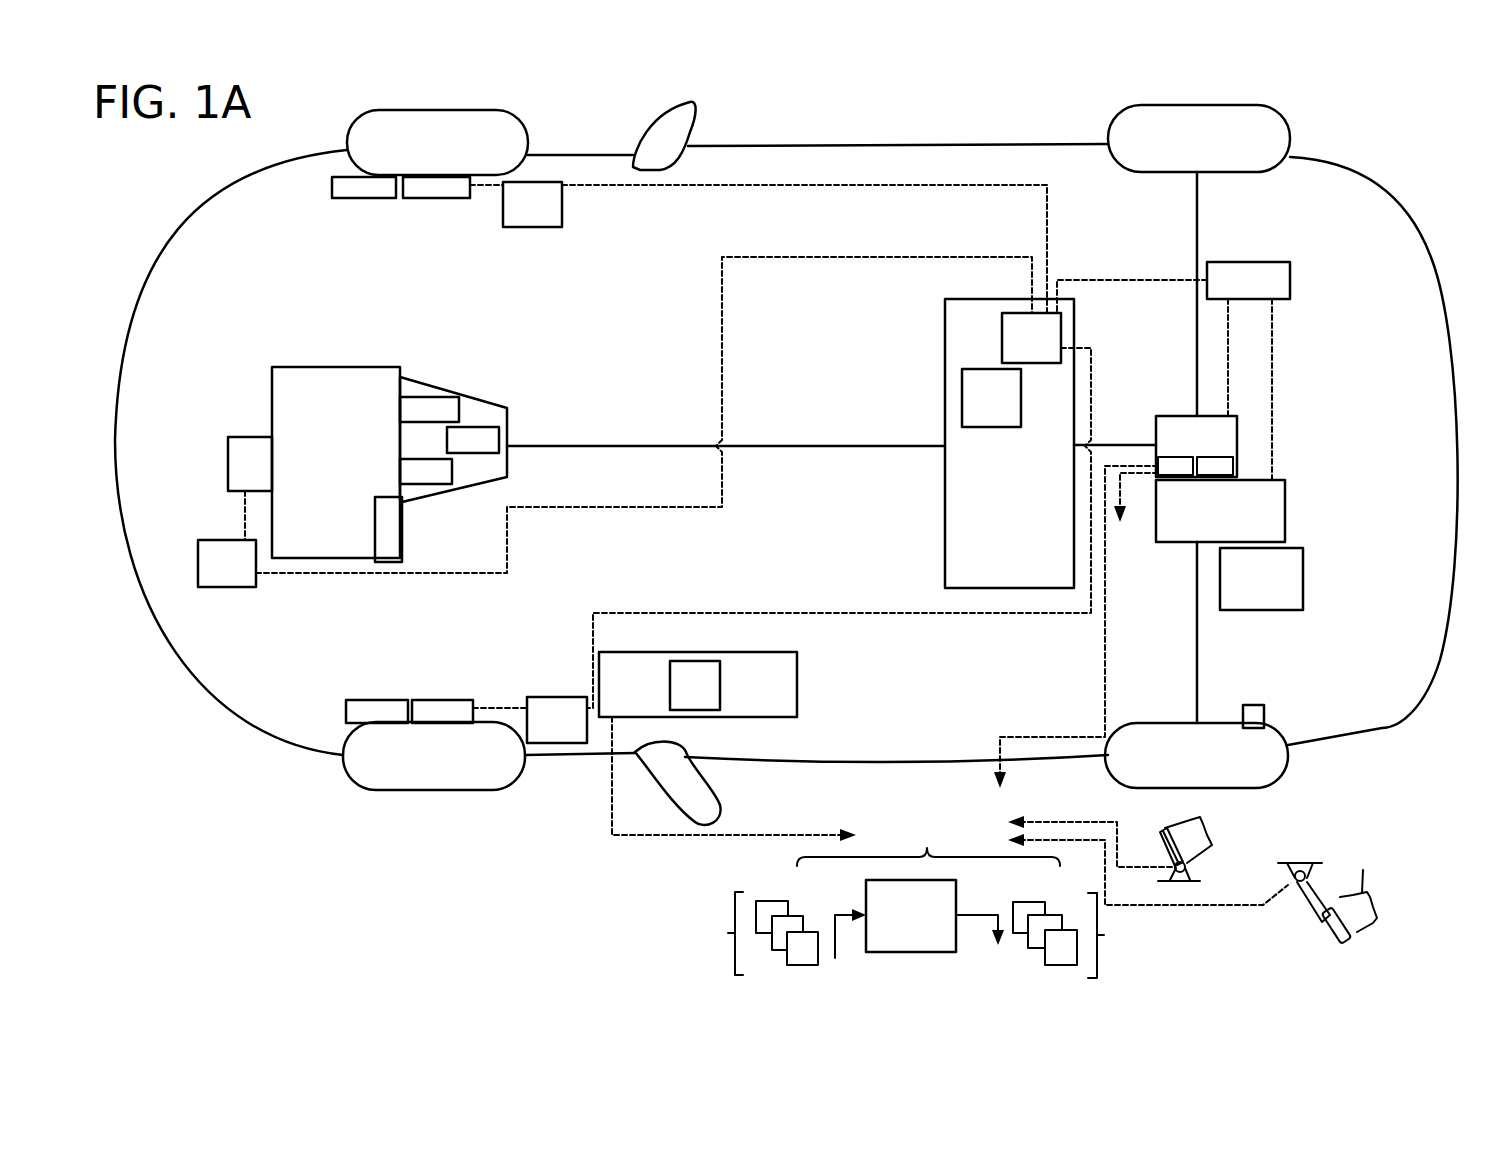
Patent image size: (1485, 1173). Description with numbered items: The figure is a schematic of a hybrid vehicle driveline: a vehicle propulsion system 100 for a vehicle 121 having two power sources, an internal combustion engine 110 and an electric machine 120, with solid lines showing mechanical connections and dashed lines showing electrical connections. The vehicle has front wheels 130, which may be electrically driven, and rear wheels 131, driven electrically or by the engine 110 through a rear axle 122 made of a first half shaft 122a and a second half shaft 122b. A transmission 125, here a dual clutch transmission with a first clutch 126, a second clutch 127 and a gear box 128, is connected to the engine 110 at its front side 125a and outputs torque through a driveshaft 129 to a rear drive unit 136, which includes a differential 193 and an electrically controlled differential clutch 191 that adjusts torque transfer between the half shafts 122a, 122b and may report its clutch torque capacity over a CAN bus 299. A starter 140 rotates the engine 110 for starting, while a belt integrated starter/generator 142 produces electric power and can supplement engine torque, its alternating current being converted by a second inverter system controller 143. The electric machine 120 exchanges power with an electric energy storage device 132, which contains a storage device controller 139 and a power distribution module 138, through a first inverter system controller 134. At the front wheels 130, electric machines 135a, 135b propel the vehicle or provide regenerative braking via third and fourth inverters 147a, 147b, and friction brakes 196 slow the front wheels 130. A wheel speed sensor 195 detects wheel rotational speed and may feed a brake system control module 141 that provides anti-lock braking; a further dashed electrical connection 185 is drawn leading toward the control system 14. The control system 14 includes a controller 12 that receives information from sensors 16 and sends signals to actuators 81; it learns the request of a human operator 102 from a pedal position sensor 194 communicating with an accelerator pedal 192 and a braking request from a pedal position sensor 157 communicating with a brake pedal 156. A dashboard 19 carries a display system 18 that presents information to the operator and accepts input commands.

The vehicle propulsion system 100 is at (935, 120).
The vehicle 121 is at (1410, 750).
The front wheels 130 is at (457, 110).
The rear wheels 131 is at (1238, 105).
The rear axle 122 is at (1249, 447).
The first half shaft 122a is at (1197, 225).
The second half shaft 122b is at (1197, 648).
The internal combustion engine 110 is at (336, 462).
The belt integrated starter/generator 142 is at (250, 464).
The second inverter system controller 143 is at (615, 422).
The starter 140 is at (375, 502).
The transmission 125 is at (425, 413).
The front side of the transmission 125a is at (398, 442).
The first clutch 126 is at (429, 409).
The second clutch 127 is at (426, 471).
The gear box 128 is at (473, 440).
The driveshaft 129 is at (617, 445).
The electric energy storage device 132 is at (1009, 443).
The power distribution module 138 is at (839, 510).
The electric energy storage device controller 139 is at (991, 398).
The first inverter system controller 134 is at (1173, 371).
The rear drive unit 136 is at (1196, 446).
The electrically controlled differential clutch 191 is at (1175, 466).
The differential 193 is at (1215, 466).
The electric machine 120 is at (1220, 511).
The brake system control module 141 is at (1261, 579).
The CAN bus 299 is at (1133, 474).
The wheel speed sensor signal 185 is at (1052, 737).
The friction brakes 196 is at (370, 450).
The electric machine 135a is at (436, 188).
The electric machine 135b is at (442, 711).
The third inverter 147a is at (758, 247).
The fourth inverter 147b is at (530, 720).
The dashboard 19 is at (727, 727).
The display system 18 is at (695, 685).
The wheel speed sensor 195 is at (1256, 705).
The control system 14 is at (1042, 855).
The controller 12 is at (919, 919).
The sensors 16 is at (735, 933).
The actuators 81 is at (1100, 935).
The pedal position sensor 194 is at (1261, 863).
The accelerator pedal 192 is at (1166, 853).
The human operator 102 is at (1190, 832).
The pedal position sensor 157 is at (1302, 892).
The brake pedal 156 is at (1324, 927).